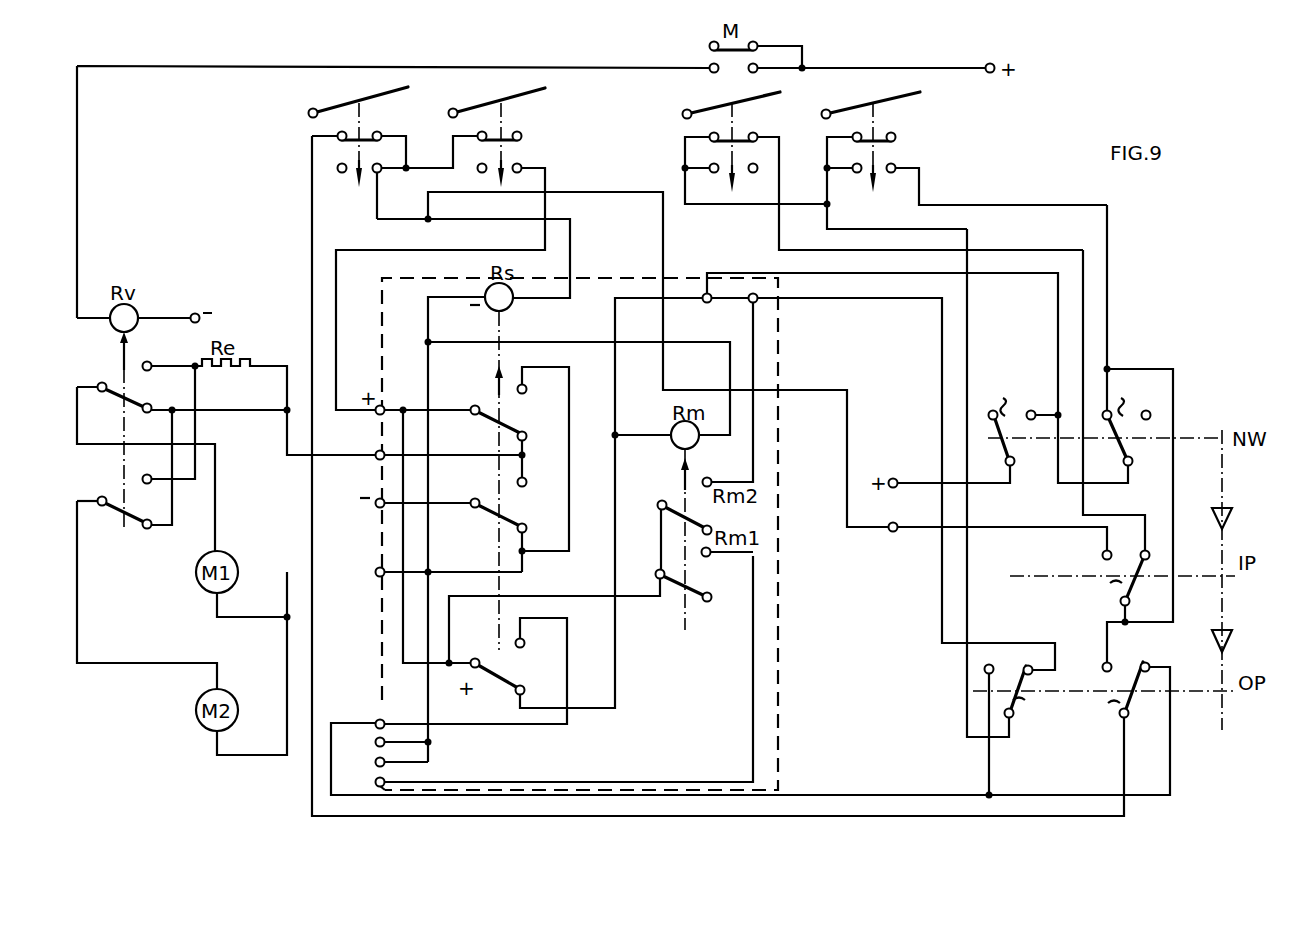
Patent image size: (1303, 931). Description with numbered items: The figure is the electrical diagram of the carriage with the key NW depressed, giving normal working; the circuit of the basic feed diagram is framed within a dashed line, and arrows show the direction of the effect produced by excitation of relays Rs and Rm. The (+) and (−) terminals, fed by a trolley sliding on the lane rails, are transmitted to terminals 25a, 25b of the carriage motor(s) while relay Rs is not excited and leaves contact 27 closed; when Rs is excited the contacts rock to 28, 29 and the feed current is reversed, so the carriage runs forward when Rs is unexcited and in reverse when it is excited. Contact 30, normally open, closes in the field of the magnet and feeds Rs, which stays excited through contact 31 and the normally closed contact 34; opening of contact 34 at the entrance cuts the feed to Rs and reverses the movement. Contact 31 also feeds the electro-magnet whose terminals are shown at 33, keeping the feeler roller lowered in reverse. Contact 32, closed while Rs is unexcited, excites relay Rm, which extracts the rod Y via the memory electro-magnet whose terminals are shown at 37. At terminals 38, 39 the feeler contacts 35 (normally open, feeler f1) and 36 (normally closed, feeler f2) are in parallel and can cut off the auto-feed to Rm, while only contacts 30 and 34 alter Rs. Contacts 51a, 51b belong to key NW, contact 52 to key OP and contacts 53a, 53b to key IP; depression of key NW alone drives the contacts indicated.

The terminal 25a is at (429, 444).
The terminal 25b is at (429, 561).
The contact 27 is at (537, 547).
The contact 28 is at (544, 459).
The contact 29 is at (537, 482).
The contact 30 is at (440, 249).
The contact 31 is at (475, 671).
The contact 32 is at (610, 503).
The terminals of electro-magnet 33 is at (386, 749).
The contact 34 is at (394, 153).
The contact 35 is at (965, 160).
The contact 36 is at (883, 171).
The terminals of memory electro-magnet 37 is at (549, 675).
The terminal 38 is at (909, 378).
The terminal 39 is at (902, 482).
The contact 51a is at (1129, 422).
The contact 51b is at (1025, 422).
The contact 52 is at (1113, 581).
The contact 53a is at (1114, 698).
The contact 53b is at (1022, 732).